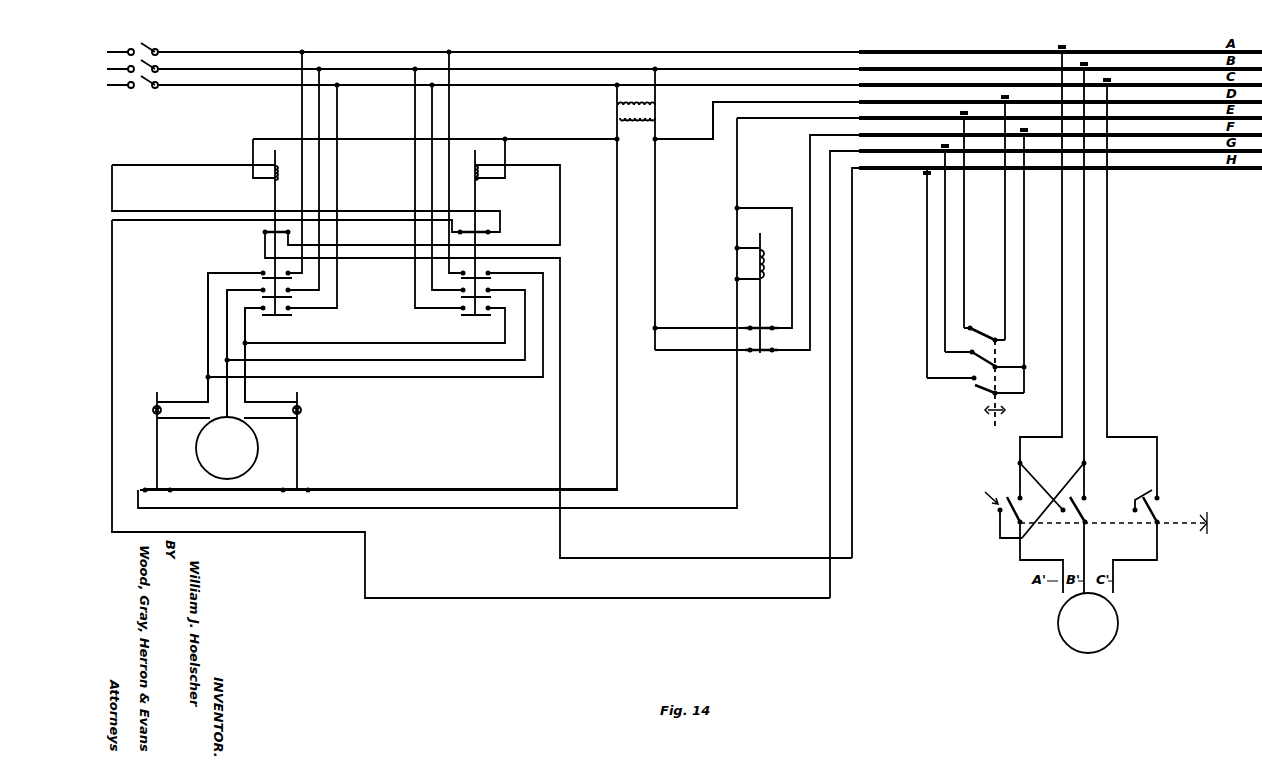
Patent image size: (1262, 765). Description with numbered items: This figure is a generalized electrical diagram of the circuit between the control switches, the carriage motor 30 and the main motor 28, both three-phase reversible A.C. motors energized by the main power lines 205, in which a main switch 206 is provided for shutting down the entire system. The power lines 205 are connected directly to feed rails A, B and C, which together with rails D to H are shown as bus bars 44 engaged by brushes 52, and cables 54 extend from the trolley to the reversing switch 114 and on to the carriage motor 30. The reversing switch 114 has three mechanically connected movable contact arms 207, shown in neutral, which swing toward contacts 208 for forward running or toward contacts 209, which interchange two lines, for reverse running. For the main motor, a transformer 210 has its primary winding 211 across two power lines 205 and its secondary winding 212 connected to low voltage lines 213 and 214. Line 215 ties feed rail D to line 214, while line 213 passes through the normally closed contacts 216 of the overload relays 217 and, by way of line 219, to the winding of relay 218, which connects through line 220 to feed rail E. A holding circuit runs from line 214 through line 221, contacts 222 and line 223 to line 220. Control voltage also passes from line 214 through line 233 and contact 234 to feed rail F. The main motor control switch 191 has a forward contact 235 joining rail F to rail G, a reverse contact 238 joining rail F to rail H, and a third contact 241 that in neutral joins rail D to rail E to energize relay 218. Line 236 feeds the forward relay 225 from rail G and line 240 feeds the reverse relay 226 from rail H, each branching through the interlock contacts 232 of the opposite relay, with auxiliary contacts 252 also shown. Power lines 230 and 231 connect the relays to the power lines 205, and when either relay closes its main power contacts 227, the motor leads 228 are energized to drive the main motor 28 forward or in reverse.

The main switch 206 is at (143, 50).
The main power lines 205 is at (234, 84).
The bus bars 44 is at (1178, 67).
The brushes 52 is at (1005, 95).
The cables 54 is at (1023, 267).
The three phase power lines 230 is at (305, 185).
The three phase power lines 231 is at (430, 165).
The forward relay 225 is at (273, 178).
The reverse relay 226 is at (477, 180).
The contact 252 is at (263, 233).
The interlock contacts 232 is at (490, 232).
The main power contacts 227 is at (266, 300).
The motor leads 228 is at (245, 390).
The main motor overload relays 217 is at (155, 413).
The main motor 28 is at (207, 457).
The normally closed contacts 216 is at (140, 489).
The line 219 is at (672, 490).
The transformer 210 is at (635, 112).
The primary winding 211 is at (652, 103).
The secondary winding 212 is at (612, 108).
The low voltage line 213 is at (615, 186).
The line 214 is at (656, 208).
The line 215 is at (762, 101).
The line 220 is at (739, 172).
The line 223 is at (790, 228).
The relay 218 is at (757, 260).
The contacts 222 is at (748, 325).
The line 221 is at (698, 318).
The line 233 is at (722, 352).
The contact 234 is at (774, 353).
The line 236 is at (828, 433).
The line 240 is at (853, 428).
The third contact 241 is at (980, 330).
The forward contact 235 is at (968, 356).
The reverse contact 238 is at (964, 389).
The main motor control switch 191 is at (982, 398).
The contacts 208 is at (1016, 494).
The movable contact arms 207 is at (1155, 512).
The contacts 209 is at (997, 511).
The reversing switch 114 is at (986, 494).
The carriage motor 30 is at (1058, 620).